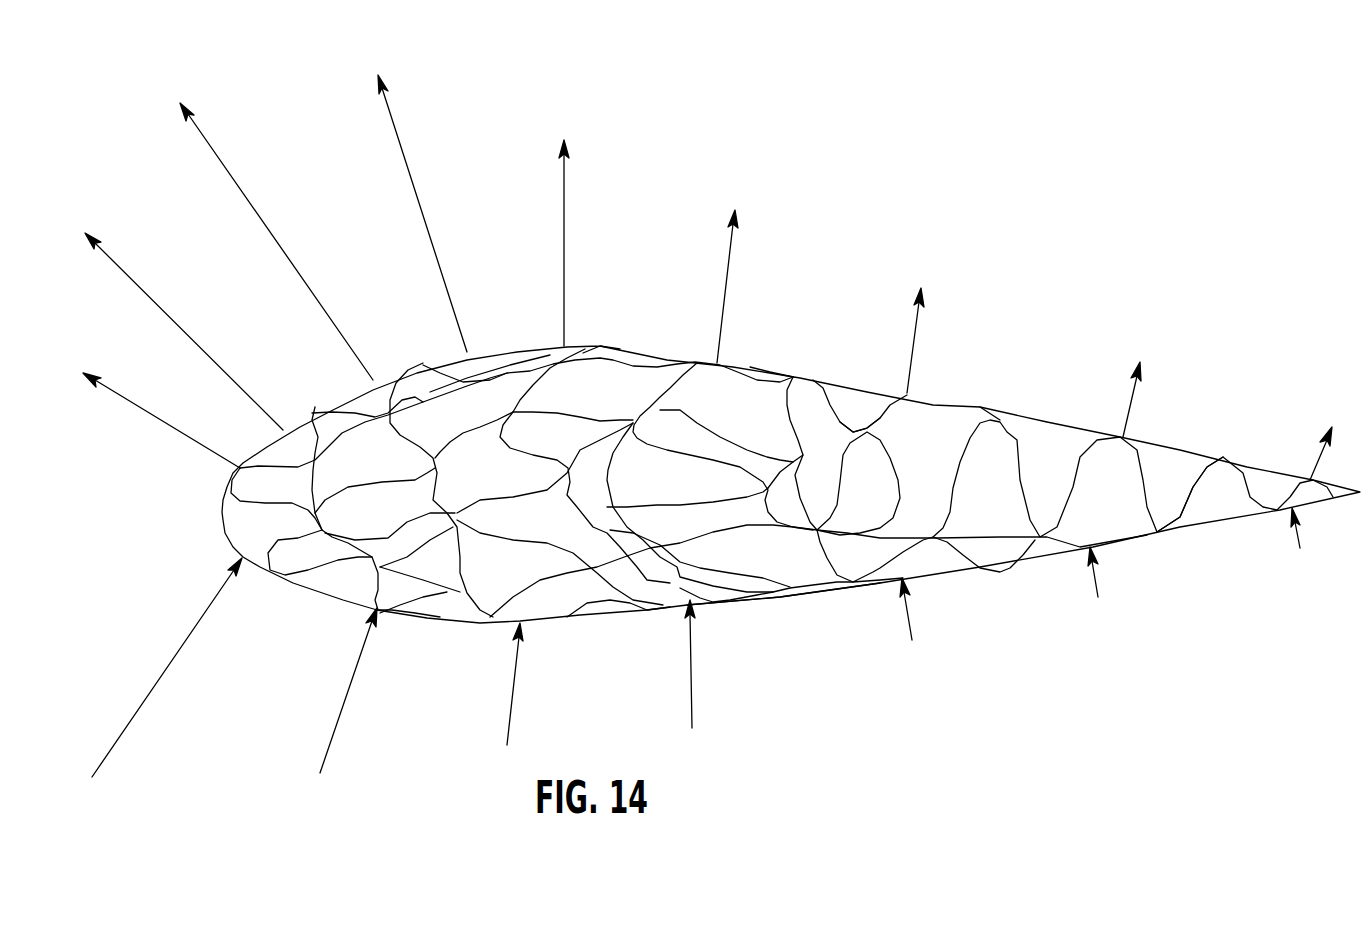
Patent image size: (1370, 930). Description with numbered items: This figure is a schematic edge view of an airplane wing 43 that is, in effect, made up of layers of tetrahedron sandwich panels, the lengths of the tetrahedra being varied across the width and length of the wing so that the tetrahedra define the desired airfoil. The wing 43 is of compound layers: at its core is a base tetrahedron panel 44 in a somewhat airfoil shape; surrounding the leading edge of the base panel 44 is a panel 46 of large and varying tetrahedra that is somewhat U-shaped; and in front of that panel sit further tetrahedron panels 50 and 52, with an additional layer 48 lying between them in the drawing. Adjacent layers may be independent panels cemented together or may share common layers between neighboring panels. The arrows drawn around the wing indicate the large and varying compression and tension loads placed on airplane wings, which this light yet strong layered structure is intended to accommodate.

The wing 43 is at (773, 618).
The base tetrahedron panel 44 is at (1183, 462).
The panel of large and varying tetrahedra 46 is at (860, 400).
The upper surface wave 48 is at (768, 378).
The tetrahedron panel 50 is at (645, 360).
The tetrahedron panel 52 is at (487, 363).